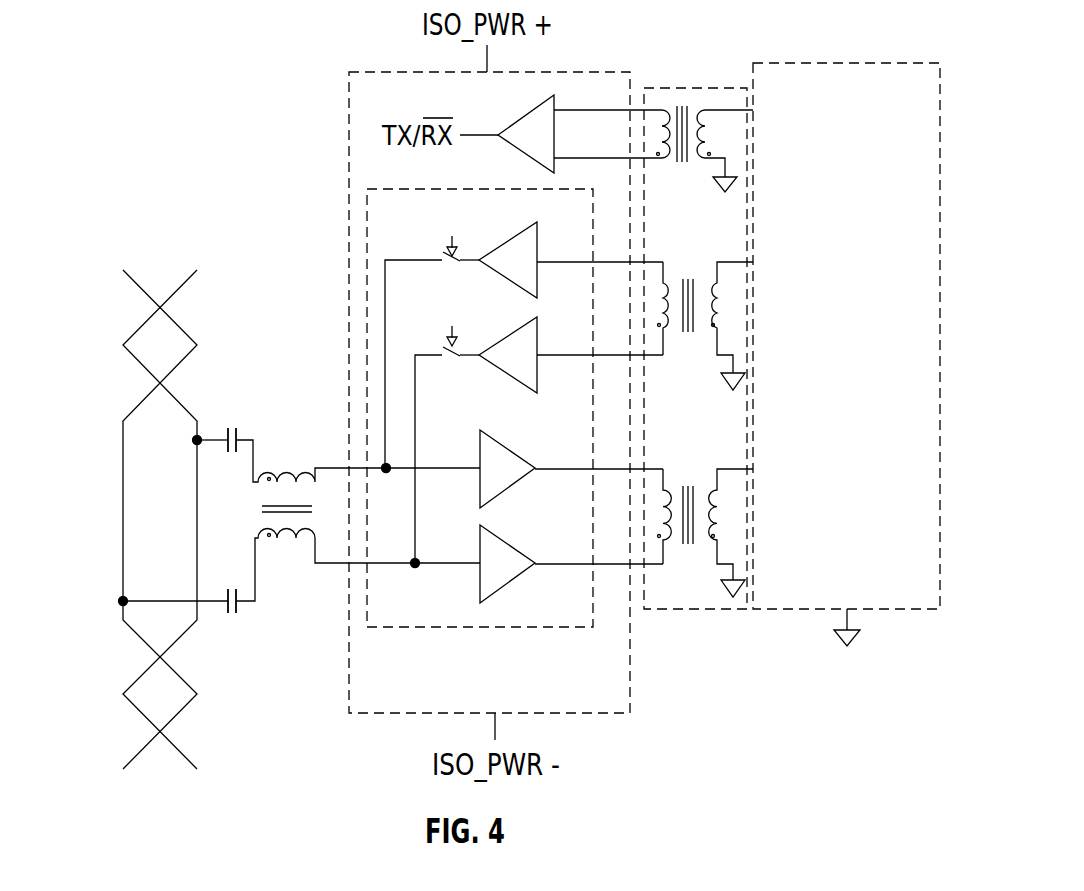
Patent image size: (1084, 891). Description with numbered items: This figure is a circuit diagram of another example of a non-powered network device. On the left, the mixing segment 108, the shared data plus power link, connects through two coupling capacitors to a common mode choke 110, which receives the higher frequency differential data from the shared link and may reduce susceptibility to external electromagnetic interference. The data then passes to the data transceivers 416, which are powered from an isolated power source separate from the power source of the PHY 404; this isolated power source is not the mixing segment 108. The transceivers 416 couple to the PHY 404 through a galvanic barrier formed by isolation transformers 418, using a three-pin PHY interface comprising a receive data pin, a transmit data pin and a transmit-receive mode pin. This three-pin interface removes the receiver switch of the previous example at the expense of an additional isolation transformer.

The mixing segment 108 is at (112, 422).
The common mode choke 110 is at (285, 410).
The data transceivers 416 is at (428, 188).
The isolation transformers 418 is at (728, 87).
The PHY 404 is at (837, 62).